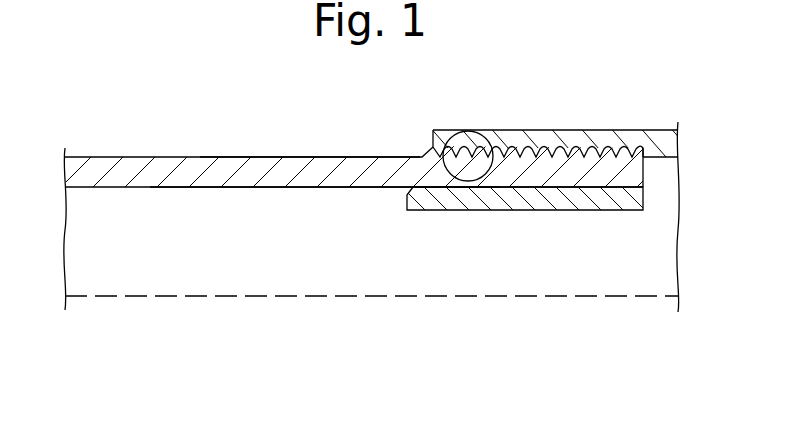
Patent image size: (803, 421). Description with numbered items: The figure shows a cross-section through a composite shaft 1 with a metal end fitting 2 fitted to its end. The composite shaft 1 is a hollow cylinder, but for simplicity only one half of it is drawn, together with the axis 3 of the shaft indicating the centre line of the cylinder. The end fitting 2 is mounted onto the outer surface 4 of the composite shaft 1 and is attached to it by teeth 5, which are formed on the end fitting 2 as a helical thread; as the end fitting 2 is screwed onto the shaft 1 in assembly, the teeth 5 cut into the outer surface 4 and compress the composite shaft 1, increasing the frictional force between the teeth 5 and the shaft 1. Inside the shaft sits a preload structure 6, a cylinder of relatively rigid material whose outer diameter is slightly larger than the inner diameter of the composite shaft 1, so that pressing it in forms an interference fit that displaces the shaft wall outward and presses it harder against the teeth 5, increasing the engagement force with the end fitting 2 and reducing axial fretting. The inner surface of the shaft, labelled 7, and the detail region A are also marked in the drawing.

The composite shaft 1 is at (127, 162).
The end fitting 2 is at (665, 145).
The axis 3 is at (482, 296).
The outer surface 4 is at (262, 157).
The teeth 5 is at (548, 153).
The preload structure 6 is at (600, 205).
The inner surface of pipe 7 is at (319, 188).
The detail area A is at (447, 139).